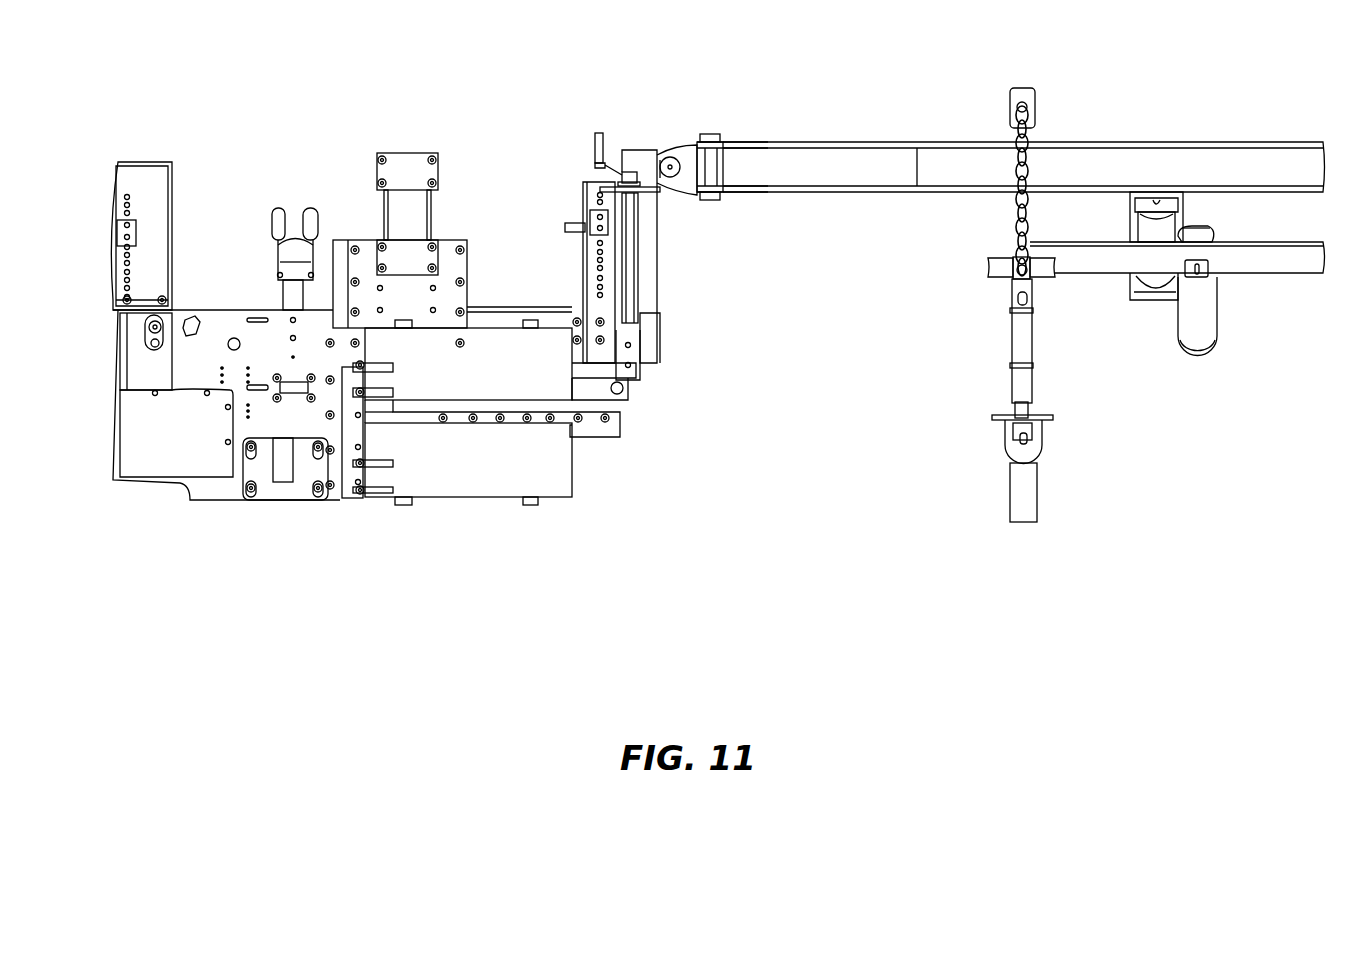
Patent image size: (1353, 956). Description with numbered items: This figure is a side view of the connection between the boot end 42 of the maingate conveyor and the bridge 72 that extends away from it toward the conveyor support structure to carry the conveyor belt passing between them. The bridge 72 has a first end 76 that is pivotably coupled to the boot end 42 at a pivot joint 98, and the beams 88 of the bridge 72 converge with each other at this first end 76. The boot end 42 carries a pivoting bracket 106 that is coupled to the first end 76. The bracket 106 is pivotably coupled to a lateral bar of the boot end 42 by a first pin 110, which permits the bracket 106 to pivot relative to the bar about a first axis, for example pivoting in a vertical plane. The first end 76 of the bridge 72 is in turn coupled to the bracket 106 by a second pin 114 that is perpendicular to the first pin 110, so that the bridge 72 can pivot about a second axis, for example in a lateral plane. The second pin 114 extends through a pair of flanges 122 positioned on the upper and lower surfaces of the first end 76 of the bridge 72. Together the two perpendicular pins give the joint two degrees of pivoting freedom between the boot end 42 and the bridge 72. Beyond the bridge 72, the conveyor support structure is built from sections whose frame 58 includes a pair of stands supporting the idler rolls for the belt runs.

The boot end 42 is at (484, 106).
The pivot joint 98 is at (614, 122).
The pivoting bracket 106 is at (662, 182).
The first pin 110 is at (667, 157).
The second pin 114 is at (708, 163).
The flanges 122 is at (742, 148).
The first end 76 is at (709, 88).
The beams 88 is at (957, 160).
The bridge 72 is at (947, 228).
The frame 58 is at (988, 472).